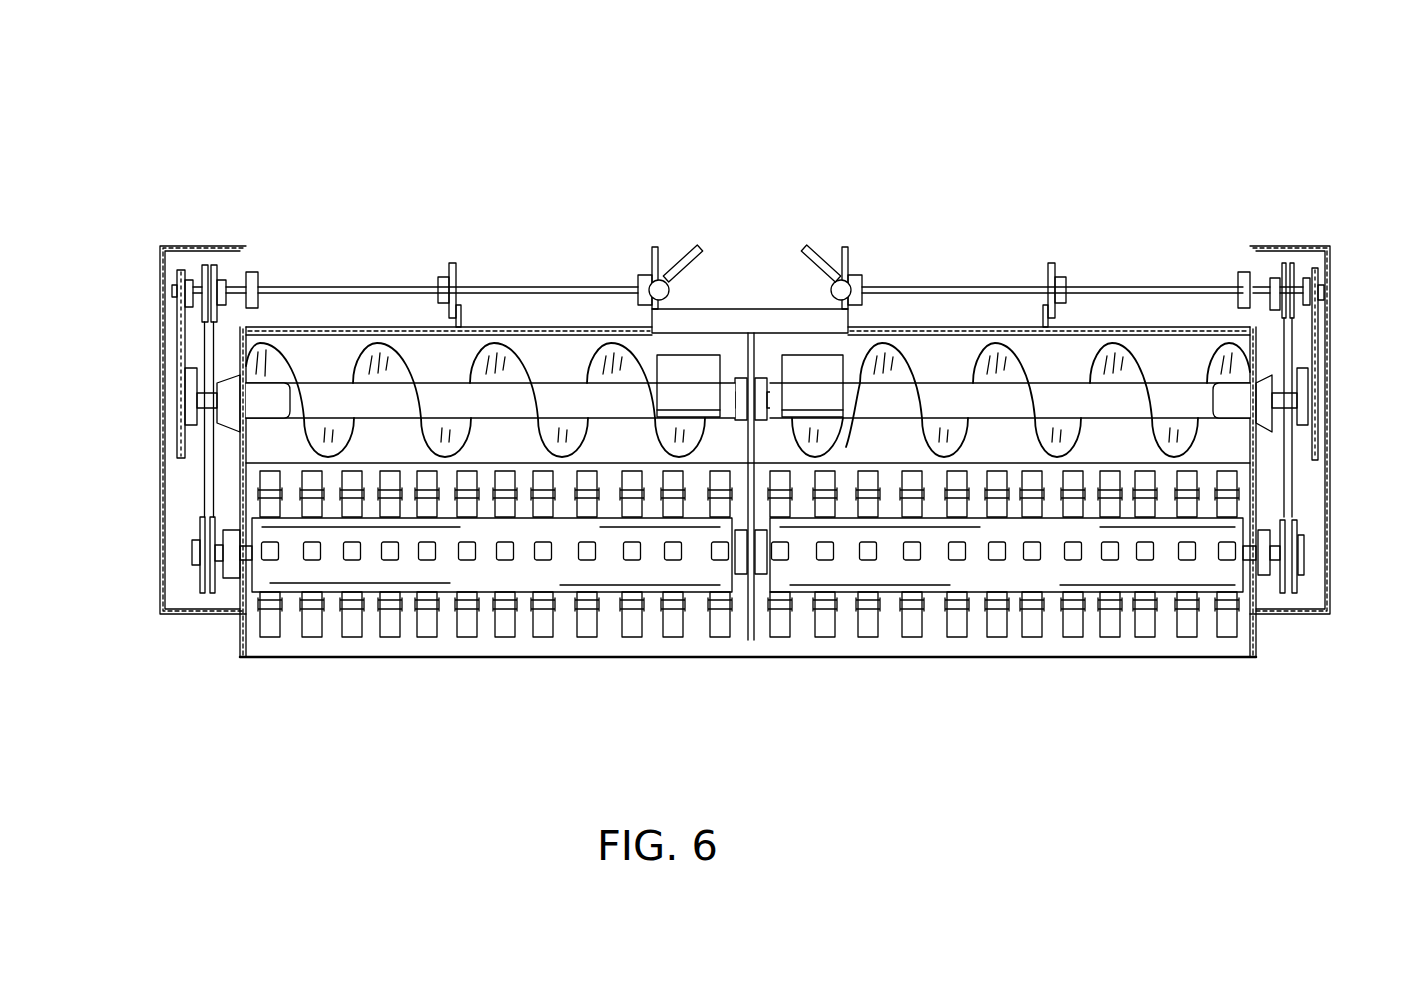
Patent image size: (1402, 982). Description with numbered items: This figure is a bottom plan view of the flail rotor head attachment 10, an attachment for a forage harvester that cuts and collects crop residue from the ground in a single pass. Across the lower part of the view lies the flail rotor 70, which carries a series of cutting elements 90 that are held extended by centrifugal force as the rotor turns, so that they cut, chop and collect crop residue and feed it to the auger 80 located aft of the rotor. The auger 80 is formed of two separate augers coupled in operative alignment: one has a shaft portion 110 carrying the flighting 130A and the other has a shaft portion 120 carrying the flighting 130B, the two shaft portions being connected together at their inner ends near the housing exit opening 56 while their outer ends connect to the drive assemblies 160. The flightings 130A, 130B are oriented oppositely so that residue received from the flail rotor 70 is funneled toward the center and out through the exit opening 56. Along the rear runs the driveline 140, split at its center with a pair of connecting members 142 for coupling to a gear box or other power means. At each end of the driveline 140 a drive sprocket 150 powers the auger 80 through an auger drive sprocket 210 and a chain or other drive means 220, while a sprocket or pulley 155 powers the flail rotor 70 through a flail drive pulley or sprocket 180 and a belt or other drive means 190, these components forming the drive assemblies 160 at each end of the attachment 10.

The flail rotor head attachment 10 is at (742, 160).
The exit opening 56 is at (743, 300).
The flail rotor 70 is at (535, 562).
The auger 80 is at (443, 397).
The cutting element 90 is at (720, 612).
The shaft portion 110 is at (572, 400).
The shaft portion 120 is at (905, 392).
The flighting 130A is at (483, 298).
The flighting 130B is at (1016, 298).
The driveline 140 is at (545, 287).
The connecting member 142 is at (668, 265).
The drive sprocket 150 is at (190, 262).
The sprocket or pulley 155 is at (208, 262).
The drive assembly 160 is at (162, 468).
The flail drive pulley or sprocket 180 is at (196, 566).
The drive means 190 is at (203, 478).
The auger drive sprocket 210 is at (178, 398).
The drive means 220 is at (1321, 292).